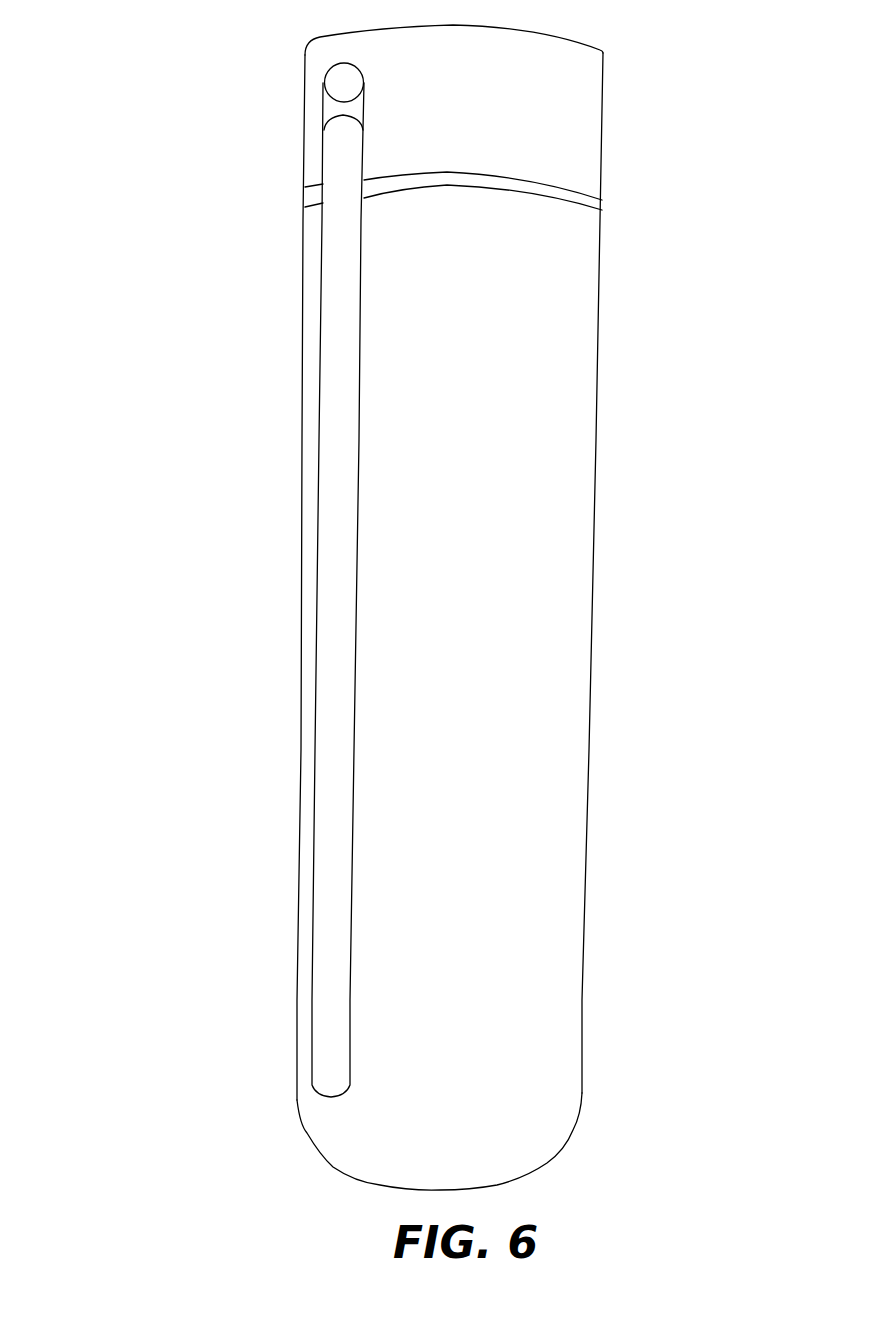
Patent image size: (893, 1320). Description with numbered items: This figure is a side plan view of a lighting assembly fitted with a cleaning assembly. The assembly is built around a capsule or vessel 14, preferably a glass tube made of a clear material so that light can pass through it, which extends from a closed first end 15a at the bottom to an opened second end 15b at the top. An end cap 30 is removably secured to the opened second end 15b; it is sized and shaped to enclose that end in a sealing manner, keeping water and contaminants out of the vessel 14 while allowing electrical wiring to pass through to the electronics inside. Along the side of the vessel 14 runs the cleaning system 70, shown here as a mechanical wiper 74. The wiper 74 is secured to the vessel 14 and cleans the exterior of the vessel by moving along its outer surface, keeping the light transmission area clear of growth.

The vessel 14 is at (622, 347).
The closed first end 15a is at (223, 1138).
The opened second end 15b is at (205, 50).
The end cap 30 is at (605, 105).
The cleaning system 70 is at (230, 197).
The mechanical wiper 74 is at (338, 382).